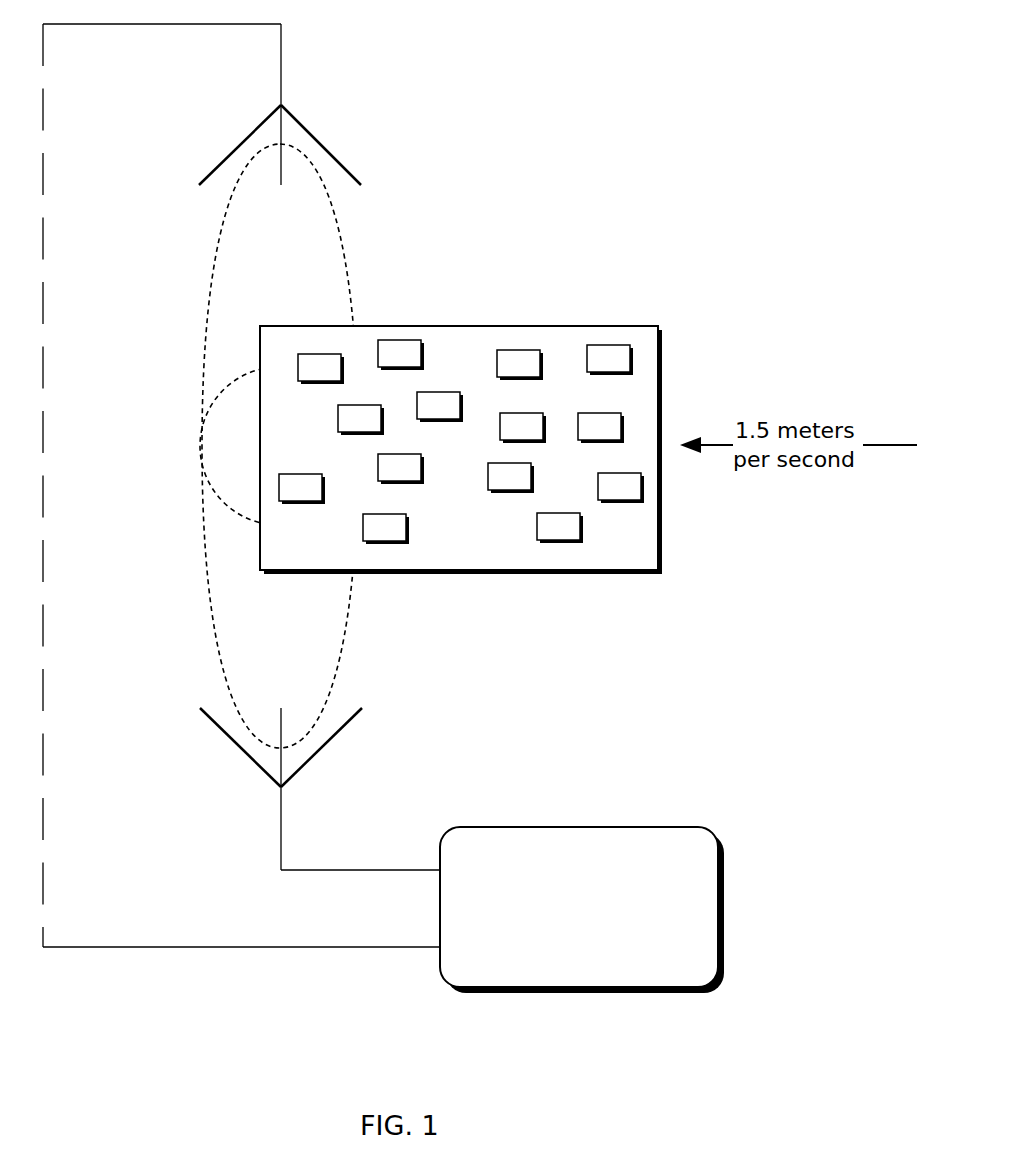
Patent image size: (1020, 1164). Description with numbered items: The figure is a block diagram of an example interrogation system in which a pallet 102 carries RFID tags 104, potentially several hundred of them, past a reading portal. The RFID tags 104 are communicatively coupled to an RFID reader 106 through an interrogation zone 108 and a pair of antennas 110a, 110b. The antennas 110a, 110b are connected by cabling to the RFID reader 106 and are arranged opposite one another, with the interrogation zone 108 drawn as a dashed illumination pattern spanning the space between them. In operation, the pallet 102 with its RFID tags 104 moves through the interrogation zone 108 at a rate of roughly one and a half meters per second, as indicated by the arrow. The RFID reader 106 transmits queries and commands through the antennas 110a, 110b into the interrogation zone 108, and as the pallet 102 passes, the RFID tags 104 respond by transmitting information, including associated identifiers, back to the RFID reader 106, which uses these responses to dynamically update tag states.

The pallet 102 is at (660, 325).
The RFID tags 104 is at (492, 492).
The RFID reader 106 is at (582, 910).
The interrogation zone 108 is at (205, 442).
The antenna 110a is at (318, 143).
The antenna 110b is at (240, 748).